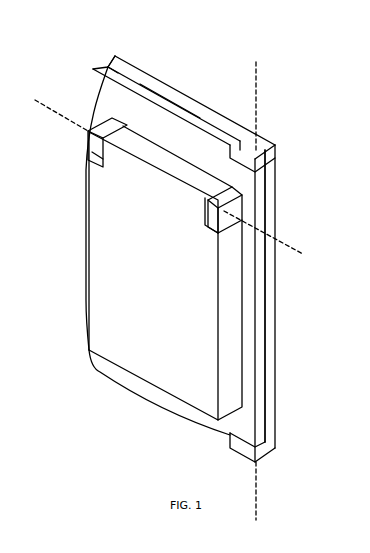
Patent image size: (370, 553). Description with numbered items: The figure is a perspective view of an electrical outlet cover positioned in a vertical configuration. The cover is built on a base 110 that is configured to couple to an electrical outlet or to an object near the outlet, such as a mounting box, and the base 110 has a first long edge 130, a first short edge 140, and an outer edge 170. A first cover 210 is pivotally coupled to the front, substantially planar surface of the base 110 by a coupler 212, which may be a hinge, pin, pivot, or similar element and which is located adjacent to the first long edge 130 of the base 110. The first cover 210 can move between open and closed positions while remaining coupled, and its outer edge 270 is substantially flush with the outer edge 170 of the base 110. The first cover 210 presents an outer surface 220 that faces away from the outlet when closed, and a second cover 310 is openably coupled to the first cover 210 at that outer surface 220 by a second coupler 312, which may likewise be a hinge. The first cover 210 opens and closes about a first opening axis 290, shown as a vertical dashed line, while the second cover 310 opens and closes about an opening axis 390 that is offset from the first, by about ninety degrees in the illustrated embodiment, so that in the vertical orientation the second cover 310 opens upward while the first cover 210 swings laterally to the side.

The base 110 is at (170, 84).
The first long edge 130 is at (270, 327).
The first short edge 140 is at (147, 76).
The outer edge 170 is at (112, 56).
The first cover 210 is at (199, 120).
The coupler 212 is at (266, 150).
The outer surface 220 is at (100, 98).
The outer edge 270 is at (108, 68).
The first opening axis 290 is at (257, 89).
The second cover 310 is at (100, 186).
The coupler 312 is at (223, 209).
The opening axis 390 is at (55, 111).